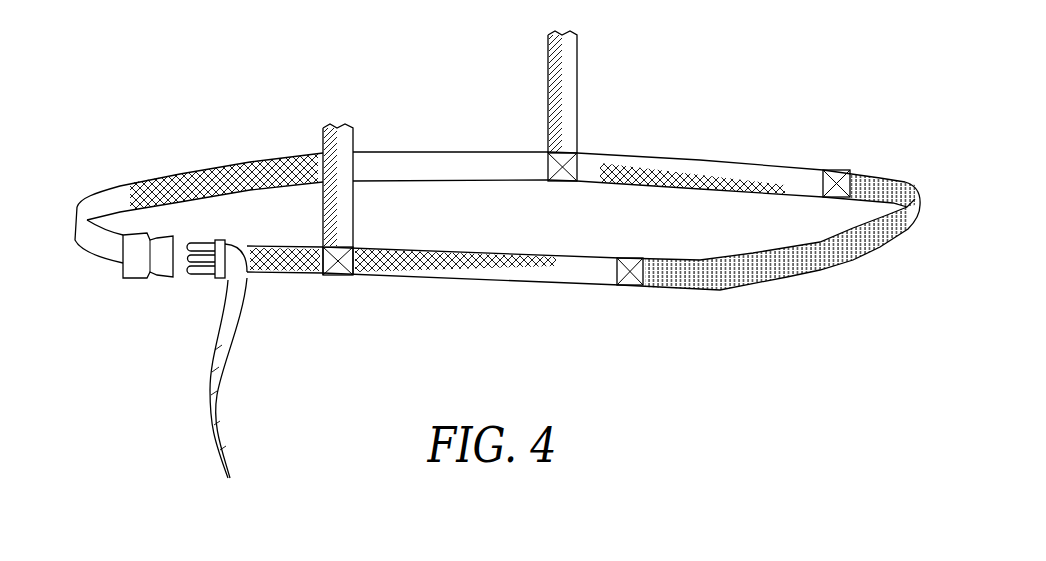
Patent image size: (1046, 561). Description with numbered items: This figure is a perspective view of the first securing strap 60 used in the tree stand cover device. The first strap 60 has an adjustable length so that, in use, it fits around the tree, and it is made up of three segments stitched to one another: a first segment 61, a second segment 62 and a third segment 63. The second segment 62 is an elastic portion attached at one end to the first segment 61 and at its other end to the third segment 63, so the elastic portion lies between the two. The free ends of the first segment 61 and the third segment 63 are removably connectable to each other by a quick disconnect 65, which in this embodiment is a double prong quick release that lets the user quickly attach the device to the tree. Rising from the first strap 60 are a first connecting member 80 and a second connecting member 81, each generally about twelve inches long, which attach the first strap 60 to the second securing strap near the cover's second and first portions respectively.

The first securing strap 60 is at (232, 155).
The first segment 61 is at (450, 272).
The second segment 62 is at (834, 262).
The third segment 63 is at (710, 170).
The quick disconnect 65 is at (150, 255).
The first connecting member 80 is at (345, 201).
The second connecting member 81 is at (560, 84).